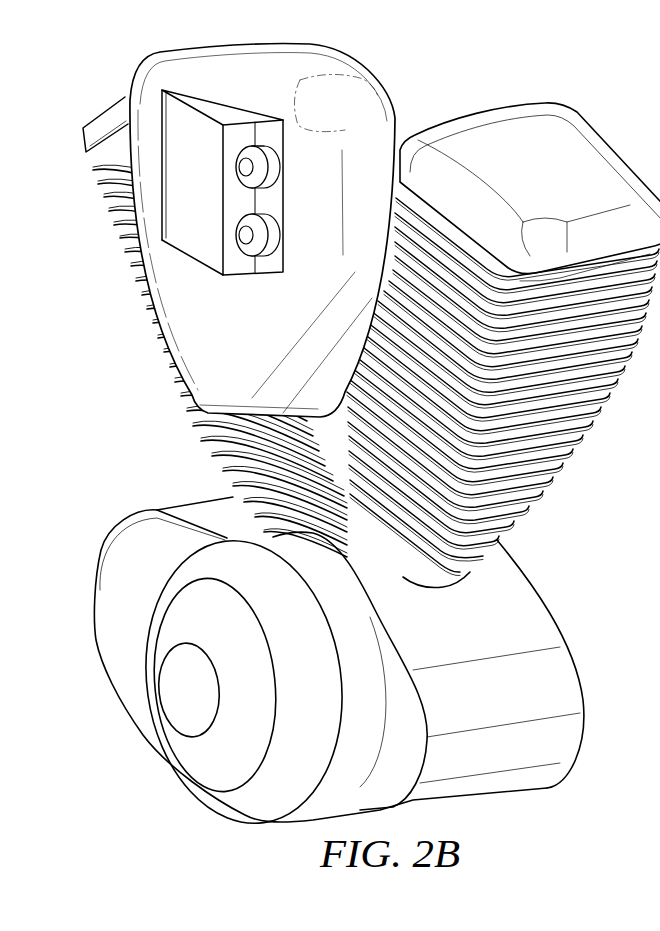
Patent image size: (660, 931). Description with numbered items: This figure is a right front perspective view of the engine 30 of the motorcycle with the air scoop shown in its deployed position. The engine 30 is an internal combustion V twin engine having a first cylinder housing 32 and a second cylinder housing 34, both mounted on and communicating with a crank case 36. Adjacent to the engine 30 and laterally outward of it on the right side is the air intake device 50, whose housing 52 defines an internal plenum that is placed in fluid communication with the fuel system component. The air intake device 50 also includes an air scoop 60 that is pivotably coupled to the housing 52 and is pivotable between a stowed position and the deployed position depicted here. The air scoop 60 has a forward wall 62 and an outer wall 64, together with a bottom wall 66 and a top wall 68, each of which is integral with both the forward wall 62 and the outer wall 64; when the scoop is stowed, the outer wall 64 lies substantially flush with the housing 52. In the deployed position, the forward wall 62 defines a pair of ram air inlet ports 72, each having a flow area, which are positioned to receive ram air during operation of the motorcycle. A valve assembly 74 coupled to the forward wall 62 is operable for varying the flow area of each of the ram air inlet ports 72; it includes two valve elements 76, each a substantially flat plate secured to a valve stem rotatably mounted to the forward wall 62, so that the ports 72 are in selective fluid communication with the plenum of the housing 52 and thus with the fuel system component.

The engine 30 is at (341, 419).
The first cylinder housing 32 is at (607, 142).
The second cylinder housing 34 is at (110, 100).
The crank case 36 is at (192, 768).
The air intake device 50 is at (283, 210).
The housing 52 is at (382, 116).
The air scoop 60 is at (235, 186).
The forward wall 62 is at (273, 199).
The outer wall 64 is at (175, 118).
The bottom wall 66 is at (210, 273).
The top wall 68 is at (230, 117).
The ram air inlet ports 72 is at (242, 153).
The valve assembly 74 is at (270, 136).
The valve elements 76 is at (277, 166).